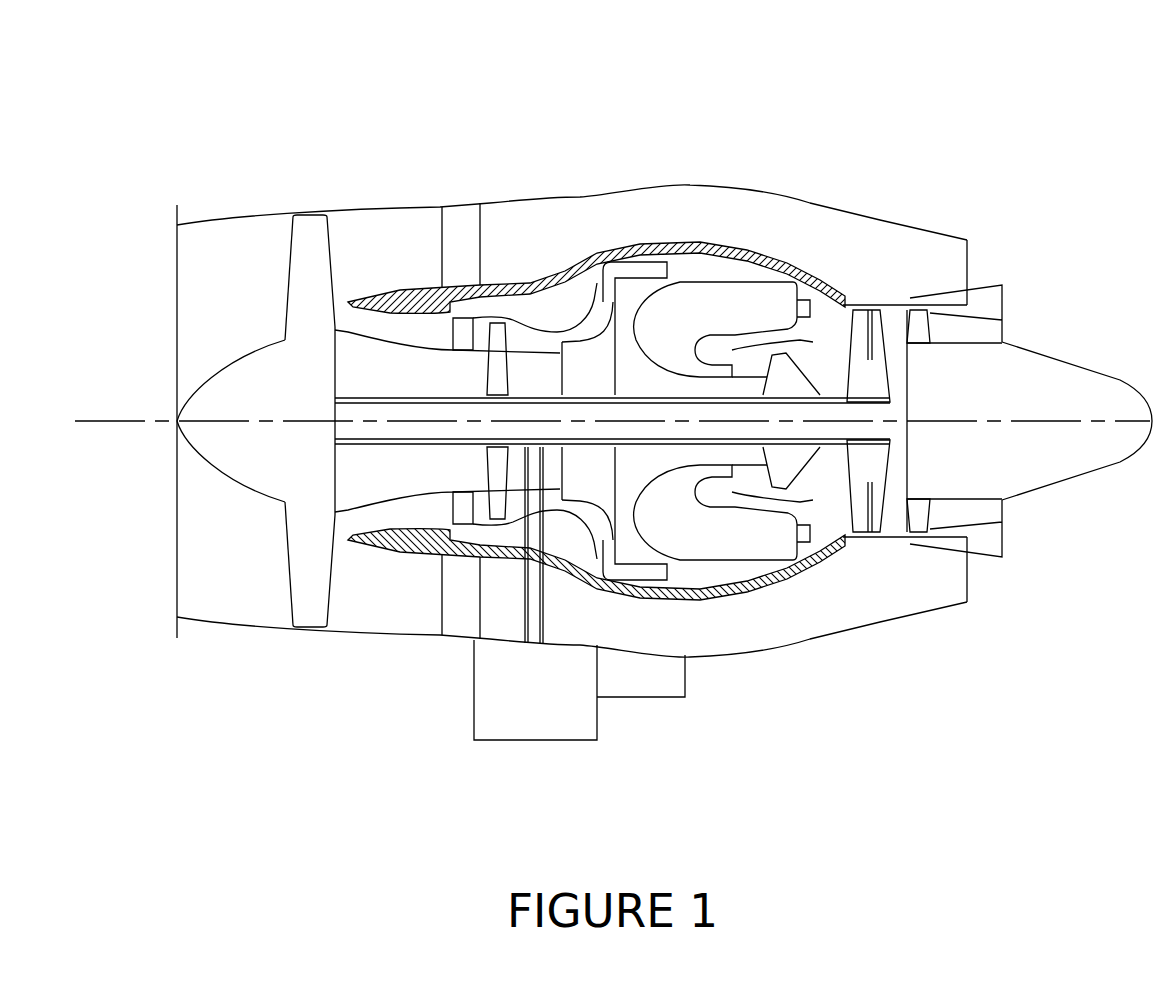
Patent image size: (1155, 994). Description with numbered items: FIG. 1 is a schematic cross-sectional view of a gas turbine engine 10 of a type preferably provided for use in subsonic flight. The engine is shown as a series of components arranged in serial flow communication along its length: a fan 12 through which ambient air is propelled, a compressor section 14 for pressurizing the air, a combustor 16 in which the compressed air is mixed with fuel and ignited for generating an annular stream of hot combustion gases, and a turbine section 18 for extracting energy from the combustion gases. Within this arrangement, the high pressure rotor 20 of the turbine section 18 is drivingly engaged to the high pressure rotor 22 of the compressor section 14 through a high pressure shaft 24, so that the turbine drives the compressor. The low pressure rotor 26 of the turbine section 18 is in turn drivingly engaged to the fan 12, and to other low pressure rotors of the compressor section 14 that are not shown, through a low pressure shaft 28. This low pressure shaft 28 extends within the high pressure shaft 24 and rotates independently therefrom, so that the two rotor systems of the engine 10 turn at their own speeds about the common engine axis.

The gas turbine engine 10 is at (848, 131).
The fan 12 is at (305, 553).
The compressor section 14 is at (527, 333).
The combustor 16 is at (715, 298).
The turbine section 18 is at (818, 527).
The high pressure rotor 20 is at (795, 355).
The high pressure rotor 22 is at (588, 357).
The high pressure shaft 24 is at (717, 357).
The low pressure rotor 26 is at (867, 305).
The low pressure shaft 28 is at (387, 440).